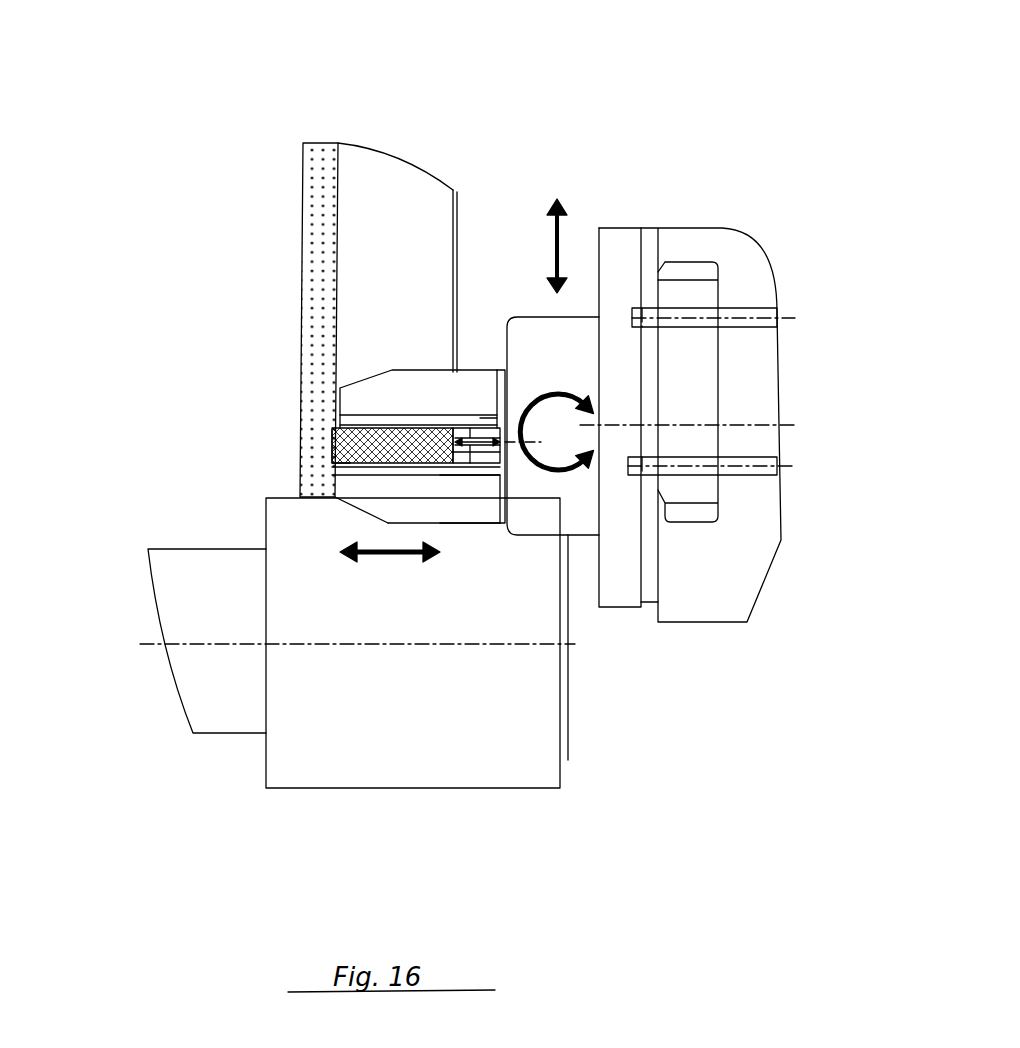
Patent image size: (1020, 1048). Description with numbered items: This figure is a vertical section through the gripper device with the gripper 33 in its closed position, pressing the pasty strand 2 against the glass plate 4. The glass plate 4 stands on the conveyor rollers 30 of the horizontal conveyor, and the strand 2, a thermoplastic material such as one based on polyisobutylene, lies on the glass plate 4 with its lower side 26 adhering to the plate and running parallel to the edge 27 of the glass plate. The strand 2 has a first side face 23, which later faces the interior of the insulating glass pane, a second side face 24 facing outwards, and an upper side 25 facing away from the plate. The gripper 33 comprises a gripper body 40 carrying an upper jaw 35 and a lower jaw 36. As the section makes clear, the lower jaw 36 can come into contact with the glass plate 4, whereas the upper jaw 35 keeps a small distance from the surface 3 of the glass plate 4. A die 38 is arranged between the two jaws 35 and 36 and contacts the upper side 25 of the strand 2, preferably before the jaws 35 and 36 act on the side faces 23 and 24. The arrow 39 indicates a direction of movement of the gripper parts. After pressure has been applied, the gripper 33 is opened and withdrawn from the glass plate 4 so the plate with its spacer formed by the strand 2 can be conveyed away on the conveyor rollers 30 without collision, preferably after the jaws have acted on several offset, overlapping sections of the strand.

The strand 2 is at (380, 447).
The surface of the glass plate 3 is at (340, 222).
The glass plate 4 is at (360, 165).
The first side face 23 is at (367, 428).
The second side face 24 is at (348, 467).
The upper side 25 is at (432, 467).
The lower side 26 is at (333, 450).
The edge of glass plate 27 is at (318, 494).
The conveyor rollers 30 is at (320, 768).
The gripper 33 is at (497, 255).
The jaw 35 is at (415, 392).
The jaw 36 is at (455, 503).
The die 38 is at (463, 457).
The arrow 39 is at (479, 442).
The gripper body 40 is at (570, 347).